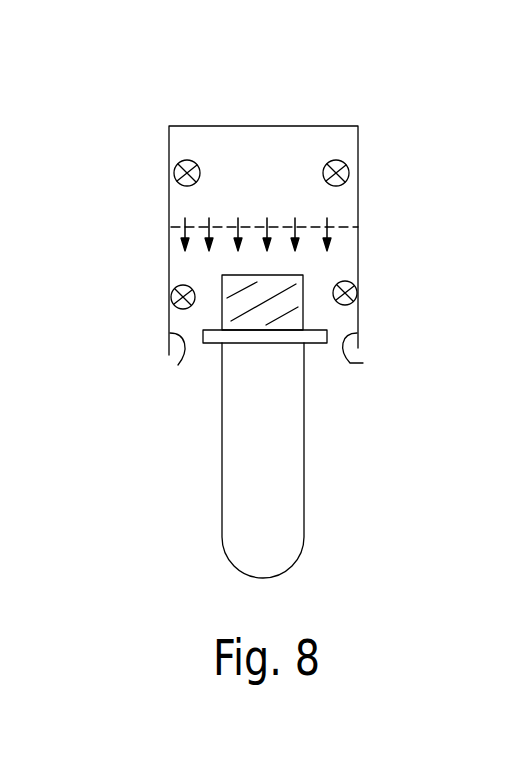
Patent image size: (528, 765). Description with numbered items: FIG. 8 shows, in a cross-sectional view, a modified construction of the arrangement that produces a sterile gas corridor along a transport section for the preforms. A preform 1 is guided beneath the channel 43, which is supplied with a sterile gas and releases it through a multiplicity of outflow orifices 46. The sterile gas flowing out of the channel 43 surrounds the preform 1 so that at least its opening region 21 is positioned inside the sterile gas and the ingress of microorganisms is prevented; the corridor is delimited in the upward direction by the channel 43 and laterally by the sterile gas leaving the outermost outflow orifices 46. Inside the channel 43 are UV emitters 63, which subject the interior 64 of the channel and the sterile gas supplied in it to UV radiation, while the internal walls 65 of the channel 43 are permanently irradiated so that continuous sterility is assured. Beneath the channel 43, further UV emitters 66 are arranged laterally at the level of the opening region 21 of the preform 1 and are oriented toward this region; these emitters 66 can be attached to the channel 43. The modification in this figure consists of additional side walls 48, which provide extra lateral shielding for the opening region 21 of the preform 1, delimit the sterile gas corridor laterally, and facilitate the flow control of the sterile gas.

The preform 1 is at (343, 441).
The opening region 21 is at (201, 268).
The channel 43 is at (258, 125).
The outflow orifices 46 is at (344, 219).
The side walls 48 is at (177, 365).
The UV emitters 63 is at (346, 163).
The interior of the channel 64 is at (268, 187).
The internal walls 65 is at (169, 155).
The UV emitters 66 is at (357, 291).